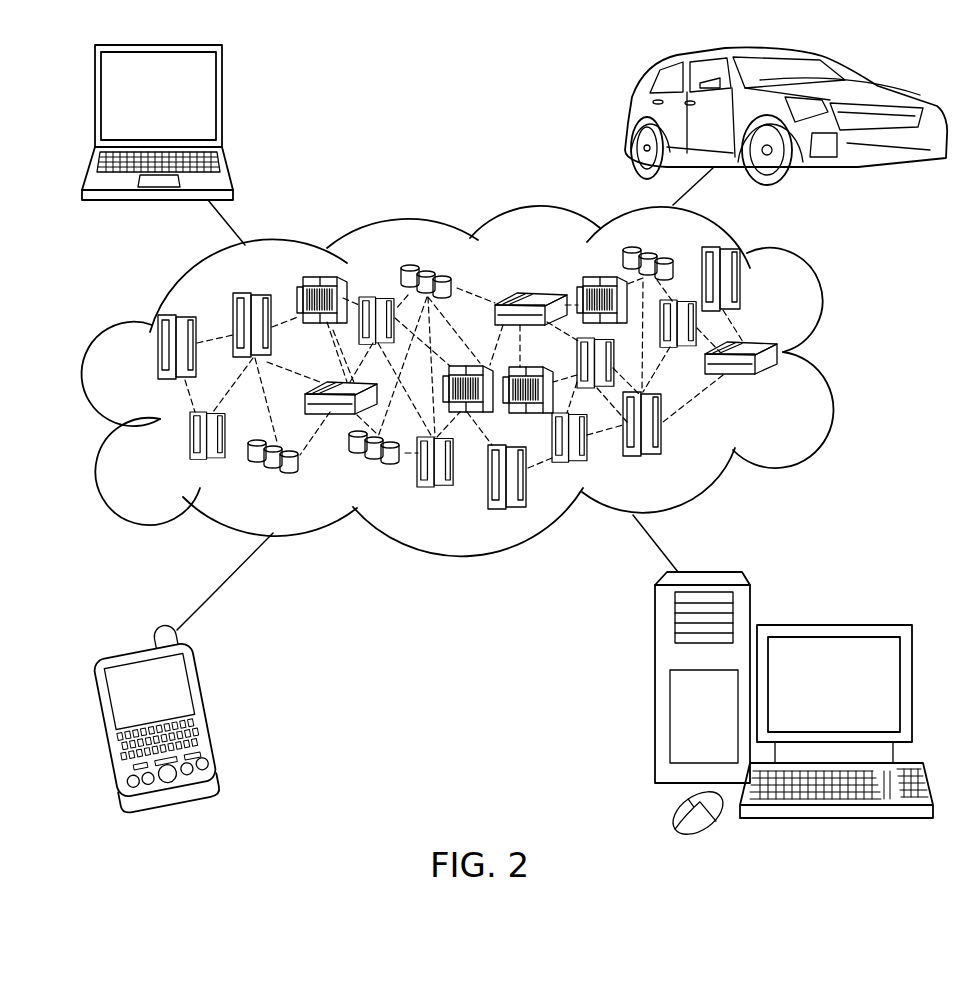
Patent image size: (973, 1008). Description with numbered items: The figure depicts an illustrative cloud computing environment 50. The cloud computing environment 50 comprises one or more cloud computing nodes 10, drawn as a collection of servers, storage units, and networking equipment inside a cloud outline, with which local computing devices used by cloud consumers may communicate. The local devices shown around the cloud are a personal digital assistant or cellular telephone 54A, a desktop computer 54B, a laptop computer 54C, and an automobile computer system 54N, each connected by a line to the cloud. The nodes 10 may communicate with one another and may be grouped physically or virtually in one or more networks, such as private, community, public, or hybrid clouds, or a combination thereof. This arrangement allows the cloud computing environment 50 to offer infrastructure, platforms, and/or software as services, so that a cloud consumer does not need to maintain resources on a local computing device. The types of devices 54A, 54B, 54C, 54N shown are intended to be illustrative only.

The cloud computing node 10 is at (782, 386).
The cloud computing environment 50 is at (832, 355).
The personal digital assistant or cellular telephone 54A is at (212, 712).
The desktop computer 54B is at (832, 625).
The laptop computer 54C is at (222, 103).
The automobile computer system 54N is at (628, 118).